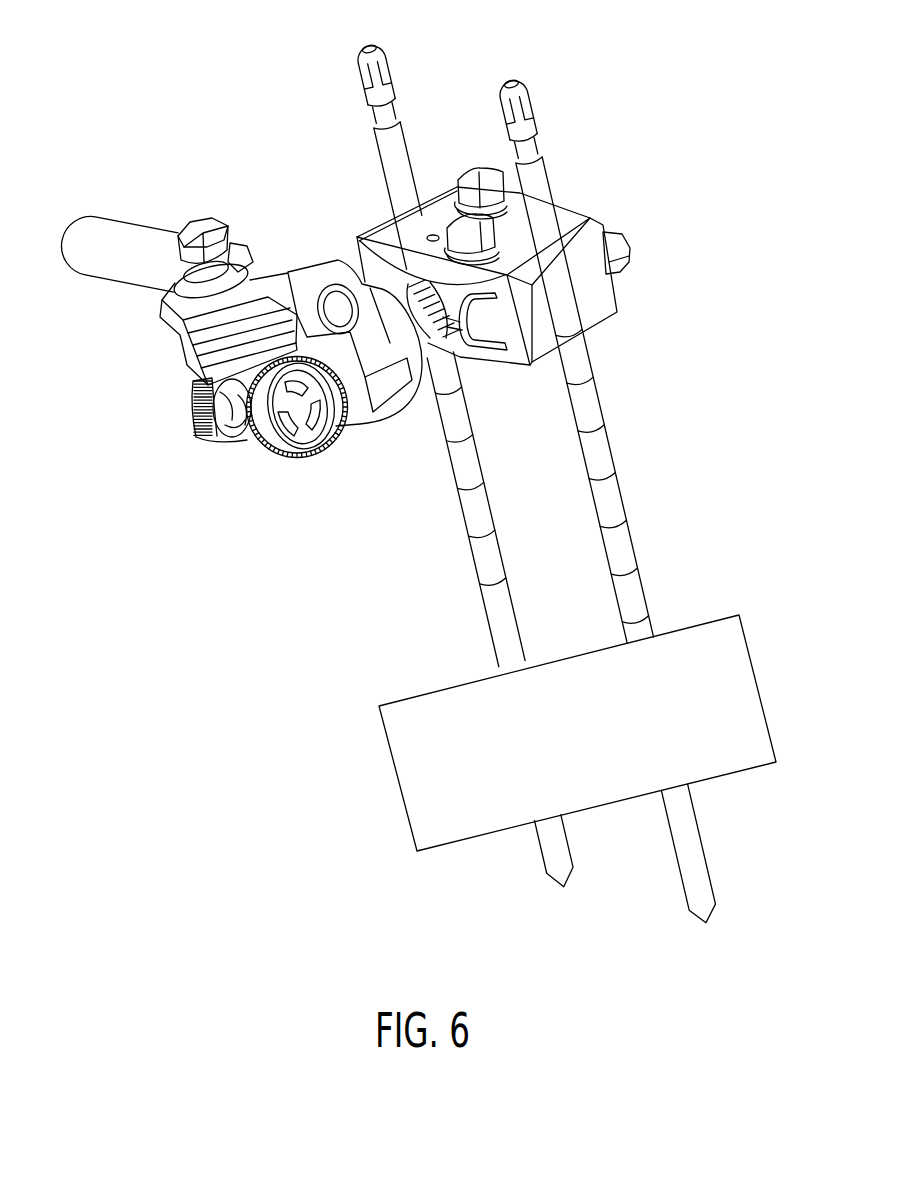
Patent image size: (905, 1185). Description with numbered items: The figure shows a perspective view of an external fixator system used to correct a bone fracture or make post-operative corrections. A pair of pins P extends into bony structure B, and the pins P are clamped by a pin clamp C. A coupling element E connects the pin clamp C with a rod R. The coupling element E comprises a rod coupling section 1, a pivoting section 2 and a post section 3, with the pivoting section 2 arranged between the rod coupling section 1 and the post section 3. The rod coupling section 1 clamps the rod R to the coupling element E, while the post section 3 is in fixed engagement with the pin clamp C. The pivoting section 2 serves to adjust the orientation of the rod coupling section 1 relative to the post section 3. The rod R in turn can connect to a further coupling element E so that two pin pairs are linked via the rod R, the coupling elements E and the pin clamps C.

The coupling element E is at (239, 165).
The rod R is at (118, 240).
The pin clamp C is at (402, 265).
The pins P is at (397, 165).
The bony structure B is at (710, 643).
The rod coupling section 1 is at (185, 329).
The pivoting section 2 is at (300, 412).
The post section 3 is at (443, 338).